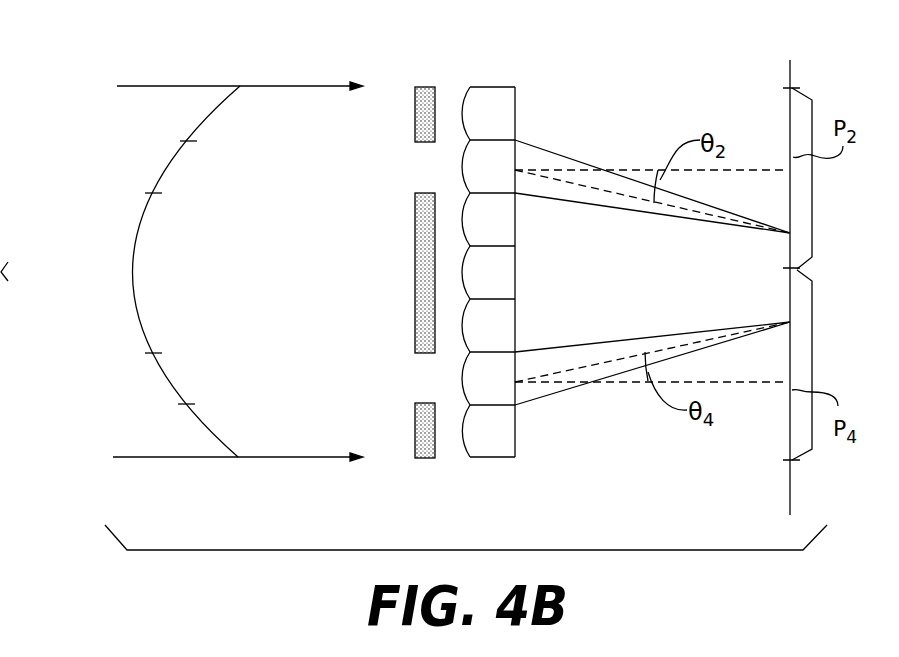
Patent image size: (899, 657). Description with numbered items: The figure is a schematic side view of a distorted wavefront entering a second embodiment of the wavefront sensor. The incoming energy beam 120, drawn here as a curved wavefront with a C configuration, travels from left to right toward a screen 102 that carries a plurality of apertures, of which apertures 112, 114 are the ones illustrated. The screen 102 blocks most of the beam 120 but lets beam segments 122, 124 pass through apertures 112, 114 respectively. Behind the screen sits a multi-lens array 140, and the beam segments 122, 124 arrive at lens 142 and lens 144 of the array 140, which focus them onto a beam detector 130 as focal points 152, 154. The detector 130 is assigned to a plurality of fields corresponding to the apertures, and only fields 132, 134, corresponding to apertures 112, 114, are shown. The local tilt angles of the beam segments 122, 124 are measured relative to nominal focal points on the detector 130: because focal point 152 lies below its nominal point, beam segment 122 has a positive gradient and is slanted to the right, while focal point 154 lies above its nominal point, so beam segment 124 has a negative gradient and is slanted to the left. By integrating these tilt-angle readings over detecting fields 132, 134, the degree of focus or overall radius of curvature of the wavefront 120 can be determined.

The screen 102 is at (423, 87).
The aperture 112 is at (427, 170).
The aperture 114 is at (425, 381).
The energy beam 120 is at (285, 458).
The beam segment 122 is at (168, 167).
The beam segment 124 is at (168, 373).
The beam detector 130 is at (790, 72).
The field 132 is at (812, 175).
The field 134 is at (812, 362).
The multi-lens array 140 is at (487, 87).
The lens 142 is at (507, 162).
The lens 144 is at (517, 390).
The focal point 152 is at (792, 243).
The focal point 154 is at (792, 322).